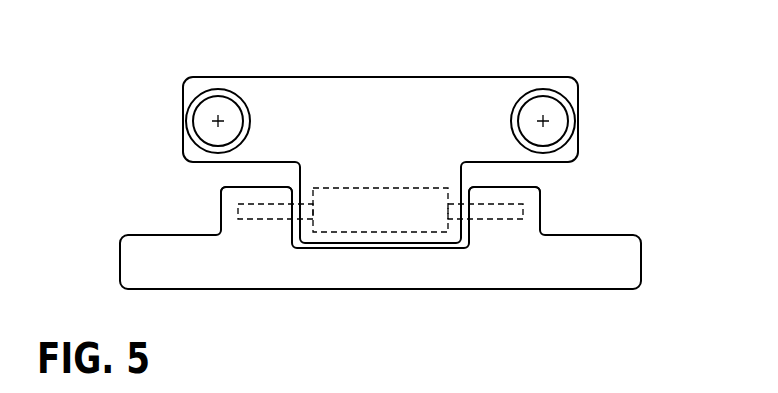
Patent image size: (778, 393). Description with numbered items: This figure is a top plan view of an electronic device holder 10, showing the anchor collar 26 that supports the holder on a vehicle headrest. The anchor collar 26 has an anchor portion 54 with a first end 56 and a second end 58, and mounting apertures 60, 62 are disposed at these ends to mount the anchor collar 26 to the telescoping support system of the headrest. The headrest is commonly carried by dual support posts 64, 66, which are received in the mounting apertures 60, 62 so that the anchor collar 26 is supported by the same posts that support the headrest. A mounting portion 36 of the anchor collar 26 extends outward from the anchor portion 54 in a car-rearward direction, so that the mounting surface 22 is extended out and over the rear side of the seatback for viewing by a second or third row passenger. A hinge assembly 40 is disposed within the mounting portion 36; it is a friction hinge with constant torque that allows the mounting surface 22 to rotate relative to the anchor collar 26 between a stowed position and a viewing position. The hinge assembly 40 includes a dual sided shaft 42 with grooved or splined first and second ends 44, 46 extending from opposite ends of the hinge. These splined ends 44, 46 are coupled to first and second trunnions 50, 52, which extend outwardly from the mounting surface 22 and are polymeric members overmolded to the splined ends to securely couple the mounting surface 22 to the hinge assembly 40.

The electronic device holder 10 is at (661, 194).
The mounting surface 22 is at (655, 258).
The anchor collar 26 is at (324, 70).
The mounting portion 36 is at (397, 180).
The hinge assembly 40 is at (388, 235).
The dual sided shaft 42 is at (452, 222).
The first end 44 is at (257, 219).
The second end 46 is at (490, 221).
The first trunnion 50 is at (220, 195).
The second trunnion 52 is at (543, 203).
The anchor portion 54 is at (395, 117).
The first end 56 is at (183, 110).
The second end 58 is at (578, 106).
The mounting aperture 60 is at (190, 141).
The mounting aperture 62 is at (568, 143).
The support post 64 is at (207, 97).
The support post 66 is at (534, 97).